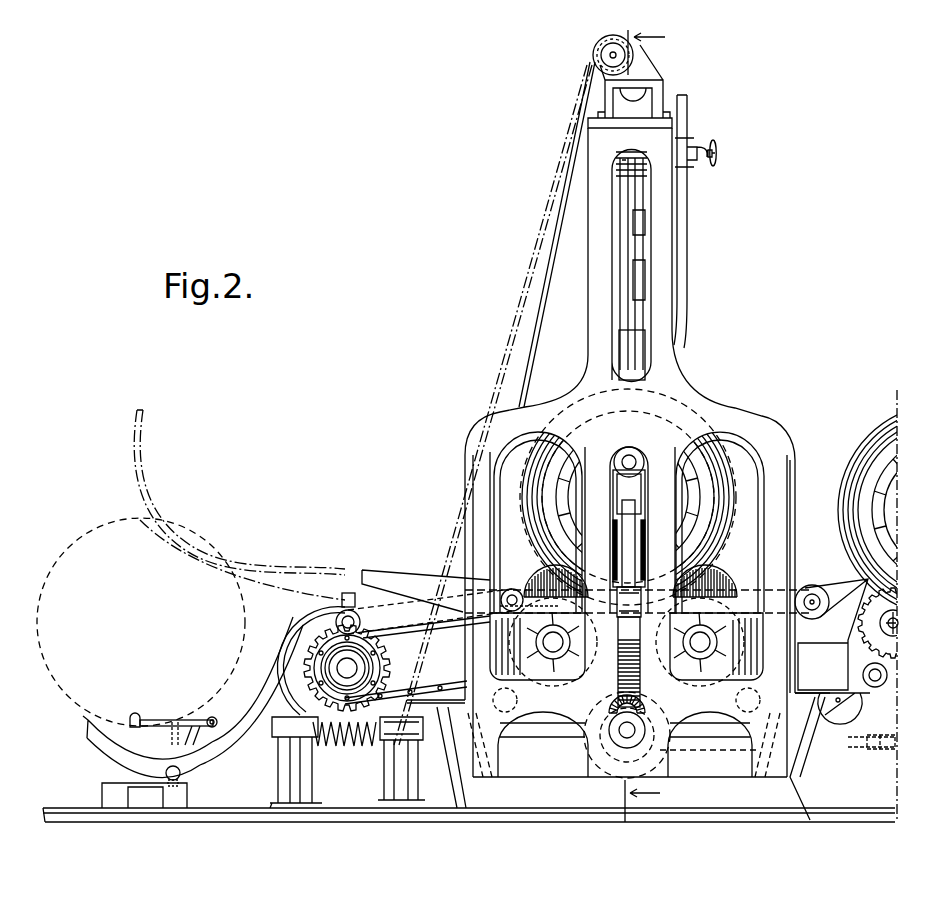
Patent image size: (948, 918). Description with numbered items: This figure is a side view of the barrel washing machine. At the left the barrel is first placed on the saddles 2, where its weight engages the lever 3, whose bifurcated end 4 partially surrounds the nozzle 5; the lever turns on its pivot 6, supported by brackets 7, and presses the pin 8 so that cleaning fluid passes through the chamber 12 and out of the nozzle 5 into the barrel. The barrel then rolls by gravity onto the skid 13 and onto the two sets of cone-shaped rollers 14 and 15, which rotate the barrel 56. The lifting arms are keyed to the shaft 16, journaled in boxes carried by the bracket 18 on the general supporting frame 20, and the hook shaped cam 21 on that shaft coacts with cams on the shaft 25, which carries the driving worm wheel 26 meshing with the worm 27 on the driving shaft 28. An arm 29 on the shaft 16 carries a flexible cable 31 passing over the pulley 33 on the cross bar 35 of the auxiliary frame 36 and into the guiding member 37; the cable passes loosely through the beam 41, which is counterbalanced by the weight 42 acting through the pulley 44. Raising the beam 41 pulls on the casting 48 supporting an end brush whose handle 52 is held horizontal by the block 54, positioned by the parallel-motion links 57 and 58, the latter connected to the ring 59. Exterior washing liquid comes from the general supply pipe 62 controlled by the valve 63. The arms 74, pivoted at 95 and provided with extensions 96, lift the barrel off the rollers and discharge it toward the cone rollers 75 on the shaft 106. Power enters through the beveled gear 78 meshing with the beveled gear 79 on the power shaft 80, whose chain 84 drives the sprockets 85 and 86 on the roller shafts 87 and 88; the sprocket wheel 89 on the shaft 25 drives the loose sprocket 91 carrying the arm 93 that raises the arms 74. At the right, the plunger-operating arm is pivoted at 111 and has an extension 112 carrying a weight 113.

The saddles 2 is at (90, 728).
The lever 3 is at (176, 722).
The bifurcated end 4 is at (150, 720).
The nozzle 5 is at (132, 718).
The pivot 6 is at (216, 720).
The brackets 7 is at (181, 773).
The pin 8 is at (196, 720).
The chamber 12 is at (105, 780).
The skid 13 is at (415, 578).
The rollers 14 is at (520, 590).
The rollers 15 is at (725, 585).
The shaft 16 is at (348, 618).
The bracket 18 is at (400, 780).
The supporting frame 20 is at (800, 745).
The hook shaped cam 21 is at (297, 614).
The shaft 25 is at (322, 690).
The driving worm wheel 26 is at (300, 668).
The worm 27 is at (310, 745).
The driving shaft 28 is at (420, 745).
The arm 29 is at (420, 615).
The flexible cable 31 is at (535, 310).
The pulley 33 is at (593, 52).
The cross bar 35 is at (650, 100).
The auxiliary frame 36 is at (665, 405).
The guiding member 37 is at (645, 200).
The beam 41 is at (638, 222).
The weight 42 is at (636, 357).
The pulley 44 is at (620, 165).
The casting 48 is at (560, 455).
The handle 52 is at (630, 462).
The block 54 is at (640, 493).
The barrel 56 is at (715, 465).
The links 57 is at (641, 540).
The links 58 is at (628, 552).
The ring 59 is at (615, 680).
The general supply pipe 62 is at (688, 115).
The valve 63 is at (716, 152).
The arms 74 is at (725, 602).
The cone rollers 75 is at (896, 608).
The beveled gear 78 is at (613, 778).
The beveled gear 79 is at (645, 710).
The power shaft 80 is at (645, 760).
The chain 84 is at (690, 750).
The sprocket 85 is at (502, 702).
The sprocket 86 is at (748, 702).
The shaft 87 is at (538, 640).
The shaft 88 is at (722, 640).
The sprocket wheel 89 is at (370, 640).
The sprocket 91 is at (530, 675).
The arm 93 is at (533, 592).
The pivot 95 is at (812, 595).
The extensions 96 is at (845, 586).
The shaft 106 is at (896, 624).
The pivot 111 is at (888, 680).
The extension 112 is at (862, 744).
The weight 113 is at (855, 710).